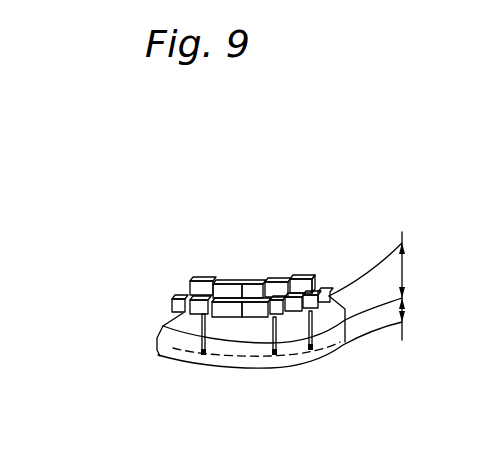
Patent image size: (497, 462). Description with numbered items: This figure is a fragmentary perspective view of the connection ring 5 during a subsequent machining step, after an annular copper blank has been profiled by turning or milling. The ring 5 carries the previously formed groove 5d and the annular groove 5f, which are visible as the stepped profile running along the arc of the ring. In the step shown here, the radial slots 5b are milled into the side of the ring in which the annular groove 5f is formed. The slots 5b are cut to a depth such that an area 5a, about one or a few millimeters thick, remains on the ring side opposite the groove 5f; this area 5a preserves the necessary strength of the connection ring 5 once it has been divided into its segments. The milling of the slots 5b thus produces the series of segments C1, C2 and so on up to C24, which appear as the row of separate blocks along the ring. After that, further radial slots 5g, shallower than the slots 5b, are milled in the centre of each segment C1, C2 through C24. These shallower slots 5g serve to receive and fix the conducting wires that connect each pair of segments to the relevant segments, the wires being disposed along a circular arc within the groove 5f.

The connection ring 5 is at (377, 287).
The area 5a is at (403, 306).
The radial slots 5b is at (290, 275).
The groove 5d is at (163, 328).
The annular groove 5f is at (273, 277).
The radial slots 5g is at (245, 290).
The segment C1 is at (247, 278).
The segment C2 is at (265, 278).
The segment C24 is at (197, 277).